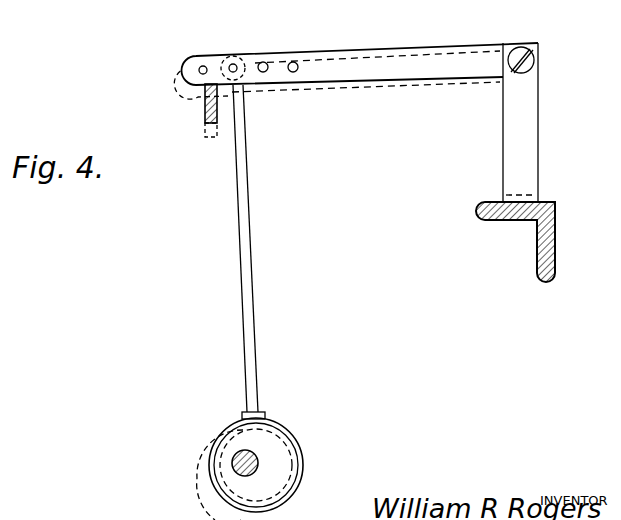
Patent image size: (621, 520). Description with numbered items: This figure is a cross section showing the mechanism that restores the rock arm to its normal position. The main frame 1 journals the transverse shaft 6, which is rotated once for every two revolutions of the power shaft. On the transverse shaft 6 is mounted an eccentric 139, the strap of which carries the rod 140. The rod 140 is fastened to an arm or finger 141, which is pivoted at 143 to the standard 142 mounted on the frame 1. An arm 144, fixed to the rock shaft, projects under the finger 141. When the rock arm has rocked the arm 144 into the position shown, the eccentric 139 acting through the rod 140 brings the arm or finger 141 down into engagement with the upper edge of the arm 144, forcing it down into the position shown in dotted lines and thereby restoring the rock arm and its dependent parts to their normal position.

The main frame 1 is at (553, 238).
The transverse shaft 6 is at (235, 457).
The eccentric 139 is at (288, 452).
The rod 140 is at (250, 297).
The arm 141 is at (342, 58).
The standard 142 is at (518, 123).
The pivot 143 is at (535, 62).
The arm 144 is at (203, 120).